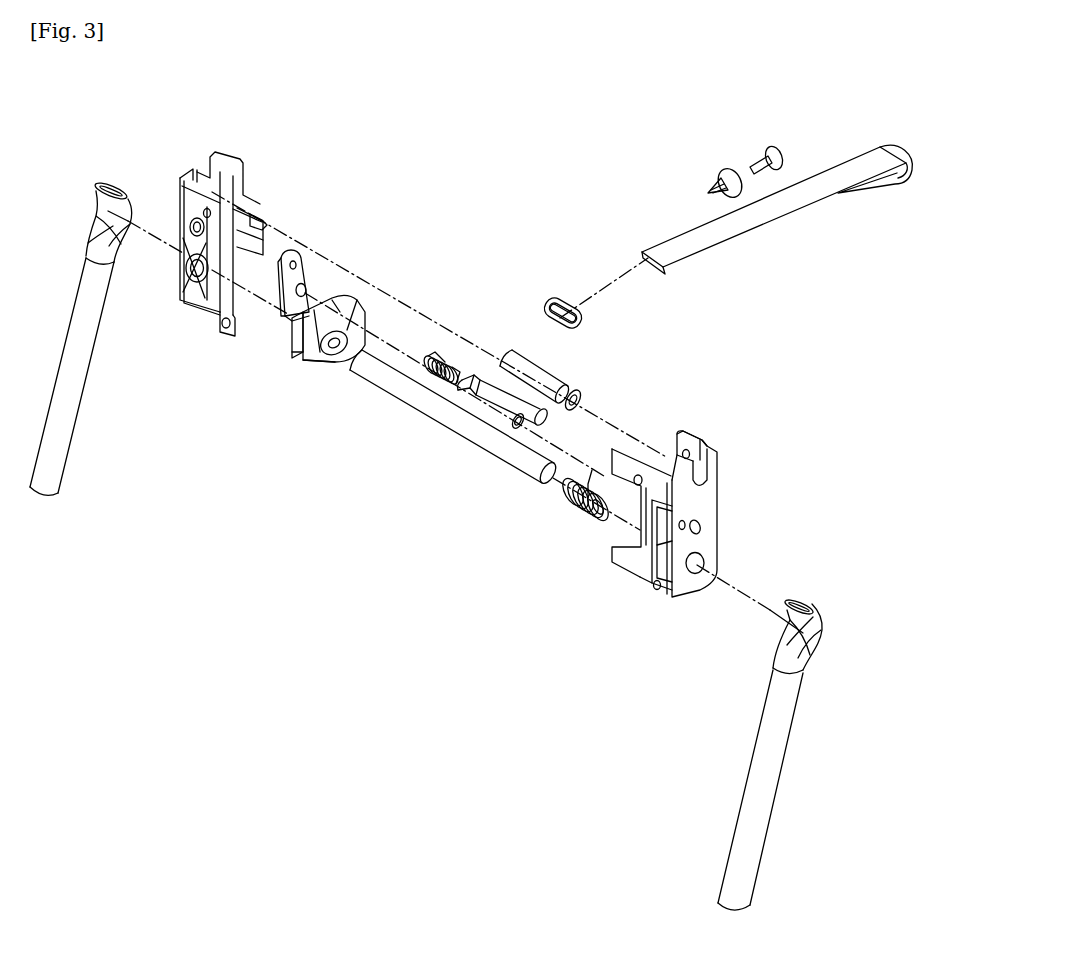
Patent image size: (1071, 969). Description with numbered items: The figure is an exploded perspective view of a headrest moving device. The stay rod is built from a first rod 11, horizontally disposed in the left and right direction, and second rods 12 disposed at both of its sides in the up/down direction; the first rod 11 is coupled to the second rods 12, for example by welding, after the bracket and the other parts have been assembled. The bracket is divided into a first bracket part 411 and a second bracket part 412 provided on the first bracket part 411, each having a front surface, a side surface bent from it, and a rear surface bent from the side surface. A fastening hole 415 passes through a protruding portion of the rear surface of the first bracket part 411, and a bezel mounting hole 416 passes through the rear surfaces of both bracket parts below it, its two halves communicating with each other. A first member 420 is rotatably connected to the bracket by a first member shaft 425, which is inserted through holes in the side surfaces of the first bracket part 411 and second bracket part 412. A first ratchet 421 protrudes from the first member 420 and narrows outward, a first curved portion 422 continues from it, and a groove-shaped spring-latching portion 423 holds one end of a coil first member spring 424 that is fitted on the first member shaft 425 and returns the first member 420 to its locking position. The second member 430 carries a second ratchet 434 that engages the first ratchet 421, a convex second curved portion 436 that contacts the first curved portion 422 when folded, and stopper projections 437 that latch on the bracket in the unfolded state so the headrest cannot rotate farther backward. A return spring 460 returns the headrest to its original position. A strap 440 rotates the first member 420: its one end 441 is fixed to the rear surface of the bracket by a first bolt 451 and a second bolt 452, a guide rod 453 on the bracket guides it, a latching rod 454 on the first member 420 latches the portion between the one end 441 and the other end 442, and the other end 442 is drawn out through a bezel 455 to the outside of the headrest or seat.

The first rod 11 is at (380, 382).
The second rod 12 is at (774, 715).
The first bracket part 411 is at (703, 476).
The second bracket part 412 is at (261, 200).
The fastening hole 415 is at (677, 455).
The bezel mounting hole 416 is at (262, 221).
The first member 420 is at (311, 275).
The first ratchet 421 is at (288, 320).
The first curved portion 422 is at (305, 292).
The spring-latching portion 423 is at (296, 268).
The first member spring 424 is at (432, 358).
The first member shaft 425 is at (493, 406).
The second member 430 is at (282, 397).
The second ratchet 434 is at (298, 336).
The second curved portion 436 is at (293, 354).
The stopper projection 437 is at (317, 364).
The strap 440 is at (795, 190).
The one end of the strap 441 is at (667, 255).
The other end of the strap 442 is at (908, 182).
The first bolt 451 is at (718, 171).
The second bolt 452 is at (760, 157).
The guide rod 453 is at (537, 376).
The latching rod 454 is at (578, 398).
The bezel 455 is at (556, 292).
The return spring 460 is at (567, 508).